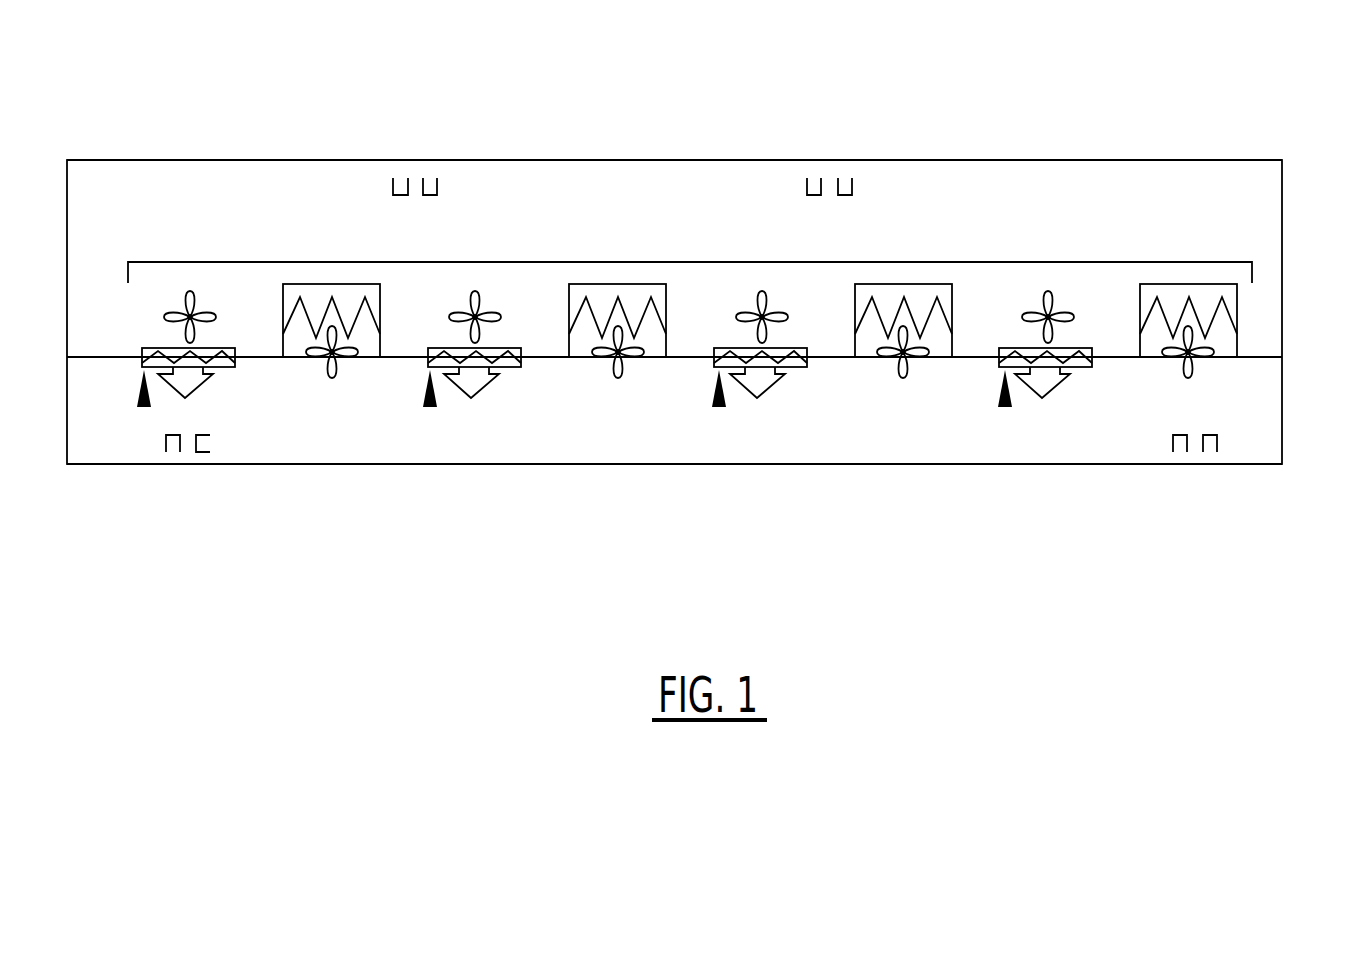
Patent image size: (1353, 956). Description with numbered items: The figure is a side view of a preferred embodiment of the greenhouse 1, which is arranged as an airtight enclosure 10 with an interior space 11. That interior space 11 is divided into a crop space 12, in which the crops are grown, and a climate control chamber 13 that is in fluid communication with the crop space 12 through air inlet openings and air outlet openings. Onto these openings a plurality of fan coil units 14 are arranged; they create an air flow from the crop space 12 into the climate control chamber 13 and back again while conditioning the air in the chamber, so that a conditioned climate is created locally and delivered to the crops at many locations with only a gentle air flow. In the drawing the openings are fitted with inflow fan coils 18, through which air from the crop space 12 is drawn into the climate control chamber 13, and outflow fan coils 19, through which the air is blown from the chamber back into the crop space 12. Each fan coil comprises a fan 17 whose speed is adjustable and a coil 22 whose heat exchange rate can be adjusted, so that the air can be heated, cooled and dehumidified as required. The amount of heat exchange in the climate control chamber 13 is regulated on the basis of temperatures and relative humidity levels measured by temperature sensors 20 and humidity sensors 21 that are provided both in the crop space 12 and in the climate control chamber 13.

The greenhouse 1 is at (682, 85).
The airtight enclosure 10 is at (1032, 125).
The interior space 11 is at (1260, 214).
The crop space 12 is at (307, 449).
The climate control chamber 13 is at (225, 195).
The fan coil unit 14 is at (733, 262).
The fan 17 is at (190, 293).
The inflow fan coil 18 is at (320, 250).
The outflow fan coil 19 is at (144, 407).
The temperature sensor 20 is at (398, 178).
The humidity sensor 21 is at (430, 178).
The coil 22 is at (148, 348).